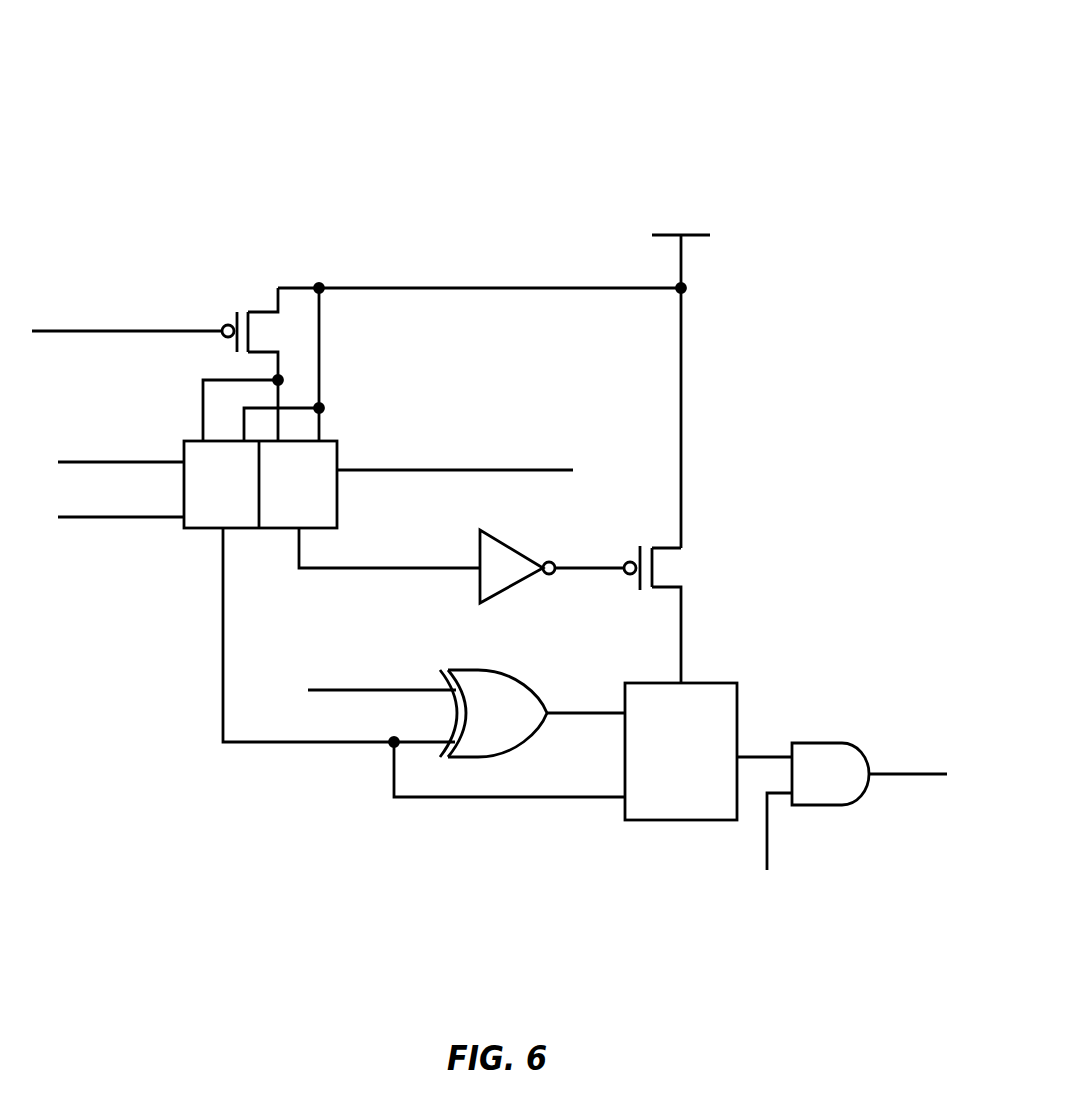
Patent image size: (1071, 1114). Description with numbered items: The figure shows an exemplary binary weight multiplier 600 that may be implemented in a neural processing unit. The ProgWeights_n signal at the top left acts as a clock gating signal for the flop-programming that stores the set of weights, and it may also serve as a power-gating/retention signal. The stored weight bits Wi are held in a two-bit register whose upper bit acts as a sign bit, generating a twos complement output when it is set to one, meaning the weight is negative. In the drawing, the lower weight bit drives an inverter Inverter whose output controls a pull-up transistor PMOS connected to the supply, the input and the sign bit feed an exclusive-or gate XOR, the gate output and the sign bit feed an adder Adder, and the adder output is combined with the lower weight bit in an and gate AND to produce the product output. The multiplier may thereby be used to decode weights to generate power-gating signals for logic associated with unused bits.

The binary weight multiplier 600 is at (488, 461).
The weight bits Wi is at (260, 484).
The inverter Inverter is at (552, 566).
The pull-up transistor PMOS is at (652, 614).
The XOR gate XOR is at (462, 705).
The adder Adder is at (708, 751).
The AND gate AND is at (842, 825).